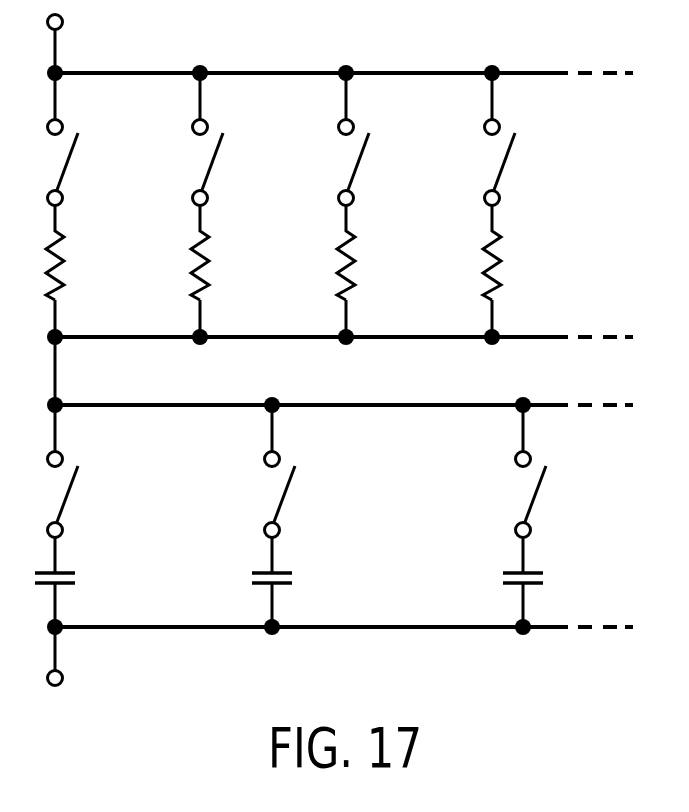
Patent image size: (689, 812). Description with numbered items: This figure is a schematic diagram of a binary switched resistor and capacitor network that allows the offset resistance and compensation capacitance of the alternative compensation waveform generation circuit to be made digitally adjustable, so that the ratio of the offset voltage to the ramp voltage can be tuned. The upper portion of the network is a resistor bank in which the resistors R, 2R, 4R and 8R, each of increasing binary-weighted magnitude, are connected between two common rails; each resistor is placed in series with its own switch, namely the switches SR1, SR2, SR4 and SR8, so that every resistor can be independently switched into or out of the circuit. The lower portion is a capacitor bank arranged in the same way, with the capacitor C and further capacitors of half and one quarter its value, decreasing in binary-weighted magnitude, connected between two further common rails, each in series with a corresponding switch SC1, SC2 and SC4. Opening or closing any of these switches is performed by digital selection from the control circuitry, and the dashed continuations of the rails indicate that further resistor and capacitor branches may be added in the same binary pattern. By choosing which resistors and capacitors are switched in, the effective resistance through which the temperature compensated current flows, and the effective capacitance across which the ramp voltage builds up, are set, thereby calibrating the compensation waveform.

The resistor switch SR1 is at (92, 157).
The resistor switch SR2 is at (238, 157).
The resistor switch SR4 is at (384, 157).
The resistor switch SR8 is at (532, 157).
The resistor R is at (69, 263).
The resistor 2R is at (221, 263).
The resistor 4R is at (367, 263).
The resistor 8R is at (513, 263).
The capacitor switch SC1 is at (92, 495).
The capacitor switch SC2 is at (312, 495).
The capacitor switch SC4 is at (565, 495).
The capacitor C is at (69, 581).